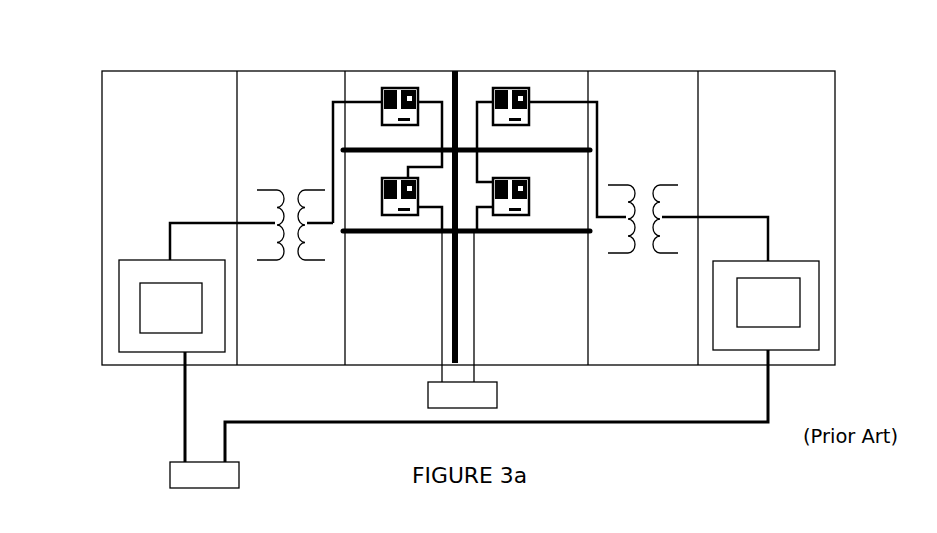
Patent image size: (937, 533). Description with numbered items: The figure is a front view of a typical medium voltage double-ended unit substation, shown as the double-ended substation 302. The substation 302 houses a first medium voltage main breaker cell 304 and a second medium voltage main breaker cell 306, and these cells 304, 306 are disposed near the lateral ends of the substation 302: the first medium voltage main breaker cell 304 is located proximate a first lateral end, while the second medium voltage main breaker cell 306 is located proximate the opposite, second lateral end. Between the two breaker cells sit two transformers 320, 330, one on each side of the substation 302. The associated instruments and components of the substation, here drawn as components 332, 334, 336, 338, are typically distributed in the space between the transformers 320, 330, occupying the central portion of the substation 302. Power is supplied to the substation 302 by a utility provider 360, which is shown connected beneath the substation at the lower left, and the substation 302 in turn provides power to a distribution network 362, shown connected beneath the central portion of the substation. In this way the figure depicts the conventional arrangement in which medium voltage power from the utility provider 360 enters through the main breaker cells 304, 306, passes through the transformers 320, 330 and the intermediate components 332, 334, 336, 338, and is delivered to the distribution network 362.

The double-ended substation 302 is at (880, 400).
The first medium voltage main breaker cell 304 is at (817, 314).
The second medium voltage main breaker cell 306 is at (123, 302).
The transformer 320 is at (257, 208).
The transformer 330 is at (680, 202).
The component 332 is at (386, 178).
The component 334 is at (407, 88).
The component 336 is at (502, 88).
The component 338 is at (524, 178).
The utility provider 360 is at (170, 475).
The distribution network 362 is at (428, 393).